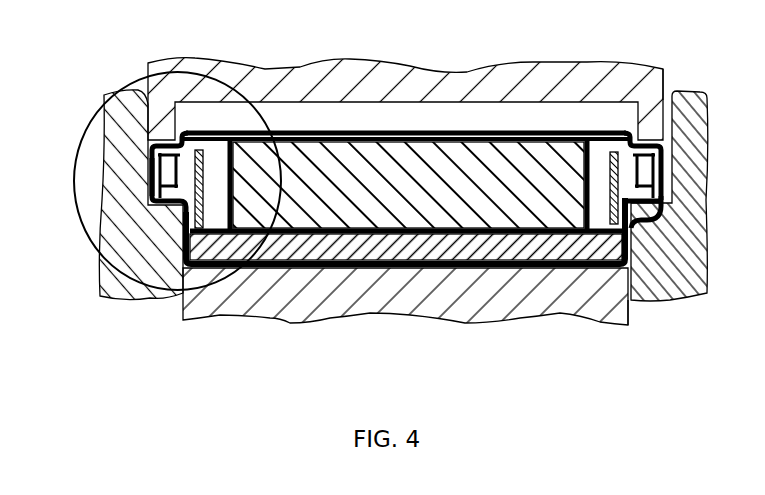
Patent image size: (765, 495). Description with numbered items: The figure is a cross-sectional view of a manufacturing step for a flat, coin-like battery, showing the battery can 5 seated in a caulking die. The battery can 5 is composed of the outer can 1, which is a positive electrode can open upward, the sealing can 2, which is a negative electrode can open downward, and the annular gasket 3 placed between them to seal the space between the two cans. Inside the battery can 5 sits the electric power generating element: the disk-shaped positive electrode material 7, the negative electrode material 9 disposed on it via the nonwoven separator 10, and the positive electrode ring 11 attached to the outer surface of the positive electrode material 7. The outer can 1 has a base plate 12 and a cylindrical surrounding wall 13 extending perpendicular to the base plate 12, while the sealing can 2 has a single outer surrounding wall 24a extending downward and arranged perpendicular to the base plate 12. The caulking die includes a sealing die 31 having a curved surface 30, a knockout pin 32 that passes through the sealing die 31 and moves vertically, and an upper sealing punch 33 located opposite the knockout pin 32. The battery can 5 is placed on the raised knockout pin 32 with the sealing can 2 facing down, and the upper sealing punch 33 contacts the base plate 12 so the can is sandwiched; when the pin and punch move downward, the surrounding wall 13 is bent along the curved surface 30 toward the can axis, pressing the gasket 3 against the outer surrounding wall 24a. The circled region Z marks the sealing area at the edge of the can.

The outer can 1 is at (397, 130).
The sealing can 2 is at (407, 268).
The gasket 3 is at (653, 176).
The battery can 5 is at (470, 129).
The positive electrode material 7 is at (320, 155).
The negative electrode material 9 is at (463, 260).
The separator 10 is at (517, 244).
The positive electrode ring 11 is at (224, 170).
The base plate 12 is at (606, 130).
The surrounding wall 13 is at (160, 190).
The outer surrounding wall 24a is at (150, 177).
The curved surface 30 is at (663, 206).
The sealing die 31 is at (690, 102).
The knockout pin 32 is at (623, 312).
The upper sealing punch 33 is at (663, 85).
The enlarged region Z is at (94, 118).